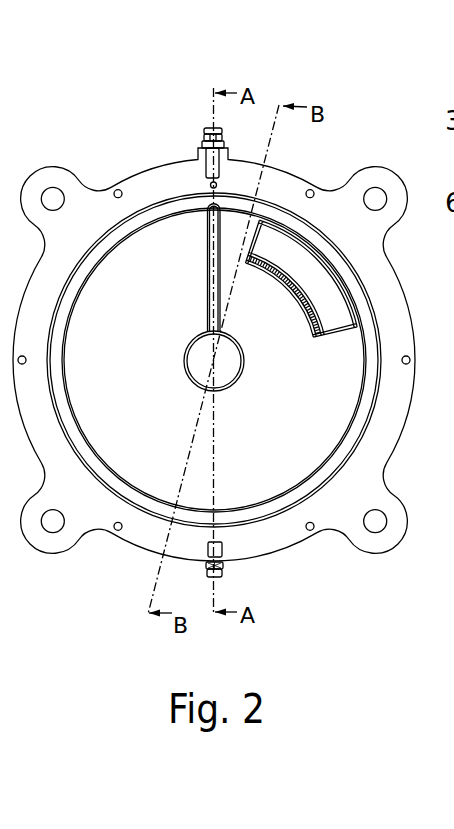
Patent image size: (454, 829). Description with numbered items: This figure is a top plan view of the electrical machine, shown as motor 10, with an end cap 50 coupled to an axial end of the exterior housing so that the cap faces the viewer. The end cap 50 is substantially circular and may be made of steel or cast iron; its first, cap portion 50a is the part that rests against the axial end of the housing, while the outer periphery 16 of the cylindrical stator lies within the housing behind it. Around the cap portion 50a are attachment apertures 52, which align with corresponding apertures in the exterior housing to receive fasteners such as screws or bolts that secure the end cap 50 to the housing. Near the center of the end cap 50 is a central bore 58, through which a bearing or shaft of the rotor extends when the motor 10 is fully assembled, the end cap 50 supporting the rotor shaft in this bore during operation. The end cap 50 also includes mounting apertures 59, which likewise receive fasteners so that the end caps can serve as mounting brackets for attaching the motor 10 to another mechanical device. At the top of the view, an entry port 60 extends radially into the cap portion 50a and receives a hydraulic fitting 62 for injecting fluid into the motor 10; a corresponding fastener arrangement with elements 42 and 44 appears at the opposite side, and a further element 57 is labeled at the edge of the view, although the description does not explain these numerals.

The motor 10 is at (359, 82).
The outer periphery 16 is at (150, 212).
The bolt head 42 is at (227, 578).
The nut 44 is at (207, 571).
The end cap 50 is at (397, 407).
The cap portion 50a is at (80, 527).
The attachment apertures 52 is at (116, 190).
The element 57 is at (0, 126).
The central bore 58 is at (225, 369).
The mounting apertures 59 is at (374, 527).
The entry port 60 is at (199, 131).
The hydraulic fitting 62 is at (224, 146).